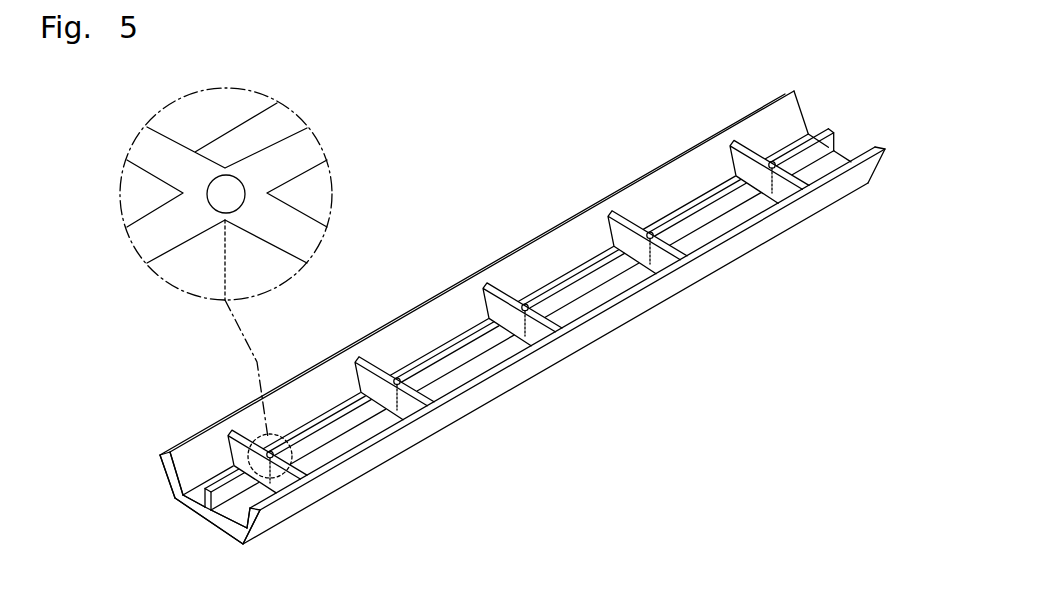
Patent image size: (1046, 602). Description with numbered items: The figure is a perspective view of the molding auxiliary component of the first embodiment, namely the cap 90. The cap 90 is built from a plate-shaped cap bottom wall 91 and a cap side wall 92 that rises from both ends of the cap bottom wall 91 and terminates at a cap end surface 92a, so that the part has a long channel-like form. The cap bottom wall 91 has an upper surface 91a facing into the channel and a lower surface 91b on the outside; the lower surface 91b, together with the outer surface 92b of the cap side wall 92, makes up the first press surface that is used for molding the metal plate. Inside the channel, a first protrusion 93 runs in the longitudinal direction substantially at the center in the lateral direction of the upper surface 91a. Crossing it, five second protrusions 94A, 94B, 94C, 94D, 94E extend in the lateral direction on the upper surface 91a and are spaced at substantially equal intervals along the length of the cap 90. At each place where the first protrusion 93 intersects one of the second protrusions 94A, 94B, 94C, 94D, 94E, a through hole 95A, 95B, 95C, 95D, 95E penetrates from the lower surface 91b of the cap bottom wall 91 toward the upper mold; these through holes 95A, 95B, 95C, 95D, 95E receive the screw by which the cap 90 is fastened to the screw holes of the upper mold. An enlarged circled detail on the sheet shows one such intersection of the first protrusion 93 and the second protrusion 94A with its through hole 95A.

The cap 90 is at (225, 532).
The cap bottom wall 91 is at (187, 512).
The upper surface of the cap bottom wall 91a is at (194, 500).
The lower surface of the cap bottom wall 91b is at (195, 518).
The cap side wall 92 is at (160, 456).
The cap end surface 92a is at (538, 238).
The outer surface of the cap side wall 92b is at (172, 491).
The first protrusion 93 is at (143, 235).
The second protrusion 94A is at (147, 150).
The second protrusion 94B is at (362, 376).
The second protrusion 94C is at (488, 303).
The second protrusion 94D is at (614, 230).
The second protrusion 94E is at (736, 152).
The through hole 95A is at (243, 183).
The through hole 95B is at (404, 387).
The through hole 95C is at (530, 314).
The through hole 95D is at (655, 242).
The through hole 95E is at (792, 180).